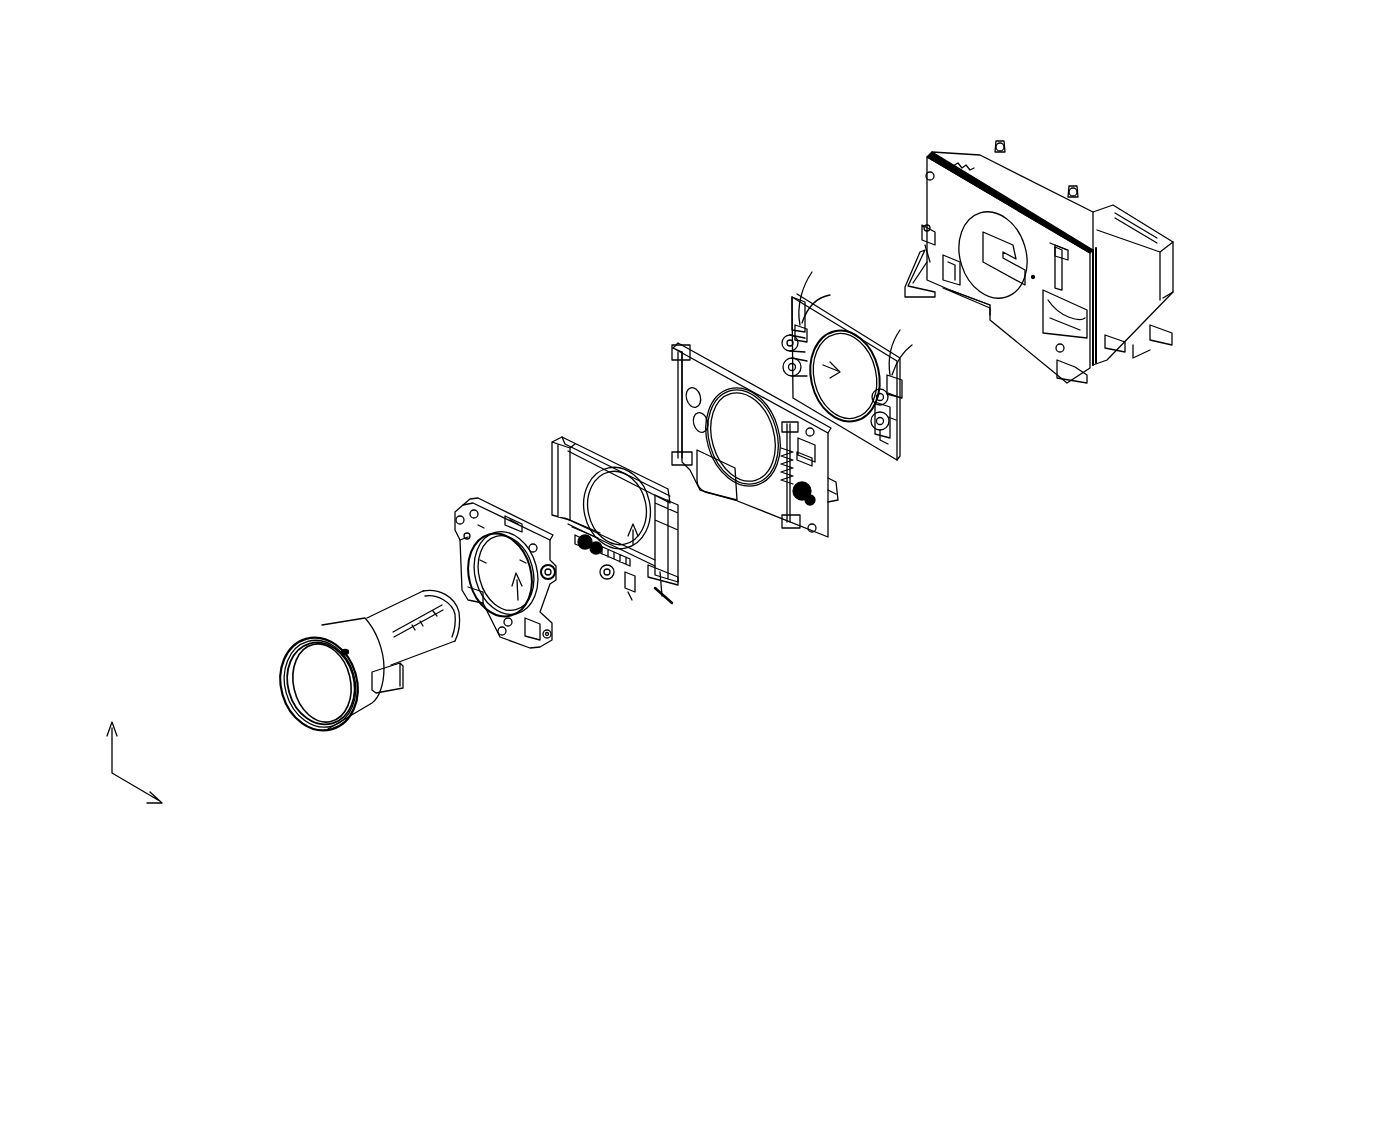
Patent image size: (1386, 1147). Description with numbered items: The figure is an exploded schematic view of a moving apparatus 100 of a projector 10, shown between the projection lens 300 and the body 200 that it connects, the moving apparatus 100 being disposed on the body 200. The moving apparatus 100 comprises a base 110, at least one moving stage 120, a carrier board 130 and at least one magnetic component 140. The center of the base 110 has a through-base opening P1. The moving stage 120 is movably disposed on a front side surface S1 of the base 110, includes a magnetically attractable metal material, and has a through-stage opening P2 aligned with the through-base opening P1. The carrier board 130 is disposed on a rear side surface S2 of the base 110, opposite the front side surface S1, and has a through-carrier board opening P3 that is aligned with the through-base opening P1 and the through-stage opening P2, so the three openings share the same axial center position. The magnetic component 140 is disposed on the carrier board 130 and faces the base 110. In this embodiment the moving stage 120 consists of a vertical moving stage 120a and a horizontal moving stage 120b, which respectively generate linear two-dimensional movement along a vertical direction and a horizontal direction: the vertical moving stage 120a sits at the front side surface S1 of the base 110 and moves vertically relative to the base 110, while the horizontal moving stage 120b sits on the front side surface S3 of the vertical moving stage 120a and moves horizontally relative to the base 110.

The projector 10 is at (1363, 762).
The moving apparatus 100 is at (478, 171).
The base 110 is at (686, 380).
The moving stage 120 is at (528, 411).
The vertical moving stage 120a is at (573, 473).
The horizontal moving stage 120b is at (468, 506).
The carrier board 130 is at (900, 366).
The magnetic component 140 is at (890, 430).
The body 200 is at (1150, 310).
The projection lens 300 is at (366, 693).
The through-base opening P1 is at (756, 463).
The through-stage opening P2 is at (633, 592).
The through-carrier board opening P3 is at (790, 347).
The front side surface S1 is at (693, 388).
The rear side surface S2 is at (719, 345).
The front side surface S3 is at (637, 596).